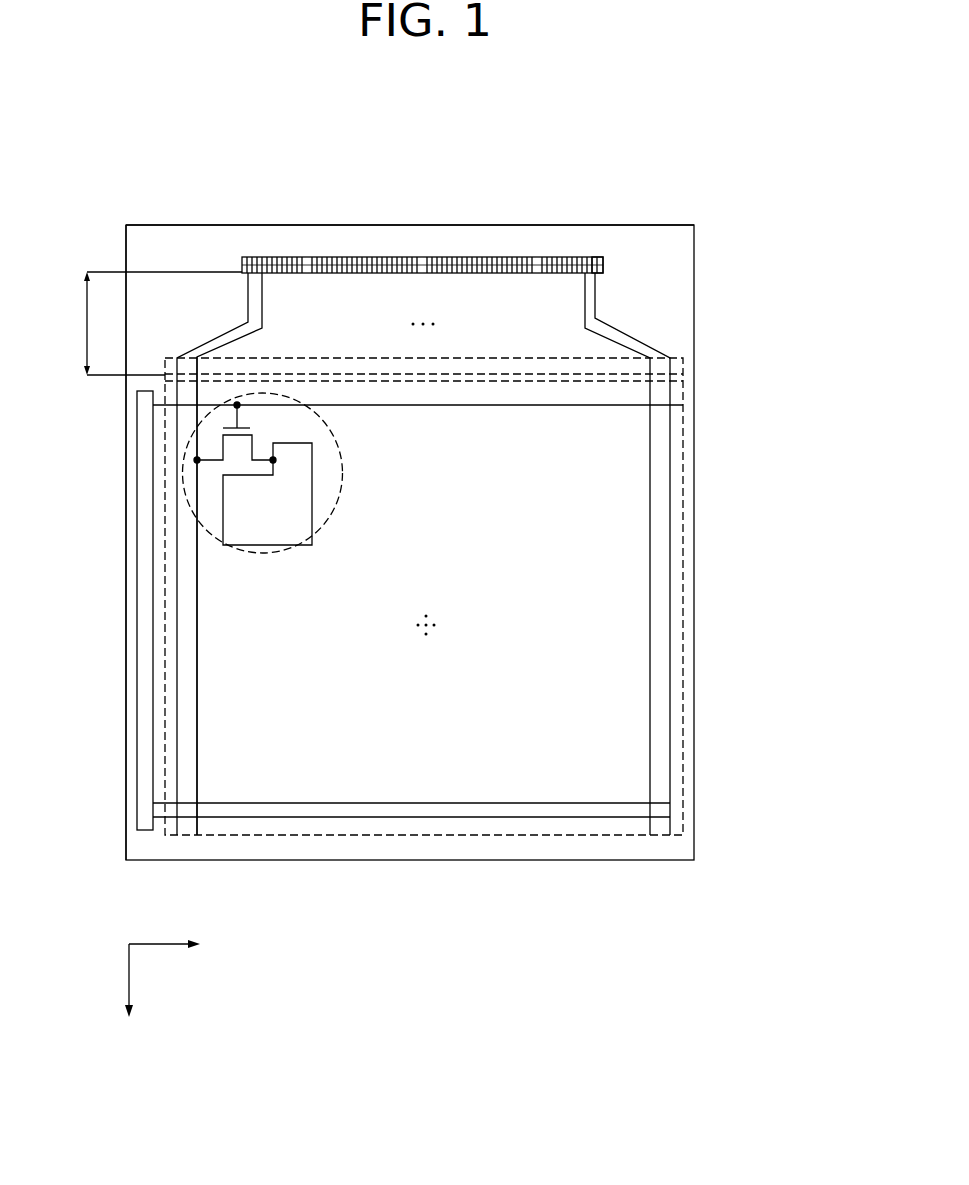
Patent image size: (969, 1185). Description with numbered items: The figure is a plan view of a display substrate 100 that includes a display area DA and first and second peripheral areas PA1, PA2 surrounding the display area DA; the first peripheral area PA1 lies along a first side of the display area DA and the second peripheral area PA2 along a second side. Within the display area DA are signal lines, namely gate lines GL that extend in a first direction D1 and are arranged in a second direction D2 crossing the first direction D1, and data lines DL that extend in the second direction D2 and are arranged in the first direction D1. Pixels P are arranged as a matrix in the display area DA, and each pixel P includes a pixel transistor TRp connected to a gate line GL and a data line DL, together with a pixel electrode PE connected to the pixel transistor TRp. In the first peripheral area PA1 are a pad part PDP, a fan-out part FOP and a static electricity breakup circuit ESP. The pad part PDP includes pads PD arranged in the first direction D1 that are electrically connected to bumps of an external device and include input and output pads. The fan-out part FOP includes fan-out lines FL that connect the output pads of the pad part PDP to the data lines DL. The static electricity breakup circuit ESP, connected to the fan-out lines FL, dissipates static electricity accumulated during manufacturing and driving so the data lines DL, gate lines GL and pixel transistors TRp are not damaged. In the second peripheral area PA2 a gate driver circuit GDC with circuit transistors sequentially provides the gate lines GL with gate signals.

The display substrate 100 is at (528, 170).
The first peripheral area PA1 is at (675, 287).
The pads PD is at (343, 257).
The pad part PDP is at (605, 257).
The fan-out part FOP is at (142, 323).
The fan-out lines FL is at (212, 340).
The static electricity breakup circuit ESP is at (683, 358).
The gate lines GL is at (513, 406).
The display area DA is at (683, 535).
The gate driver circuit GDC is at (143, 538).
The second peripheral area PA2 is at (127, 626).
The data lines DL is at (199, 680).
The pixels P is at (262, 553).
The pixel transistor TRp is at (244, 432).
The pixel electrode PE is at (312, 490).
The first direction D1 is at (180, 944).
The second direction D2 is at (129, 997).